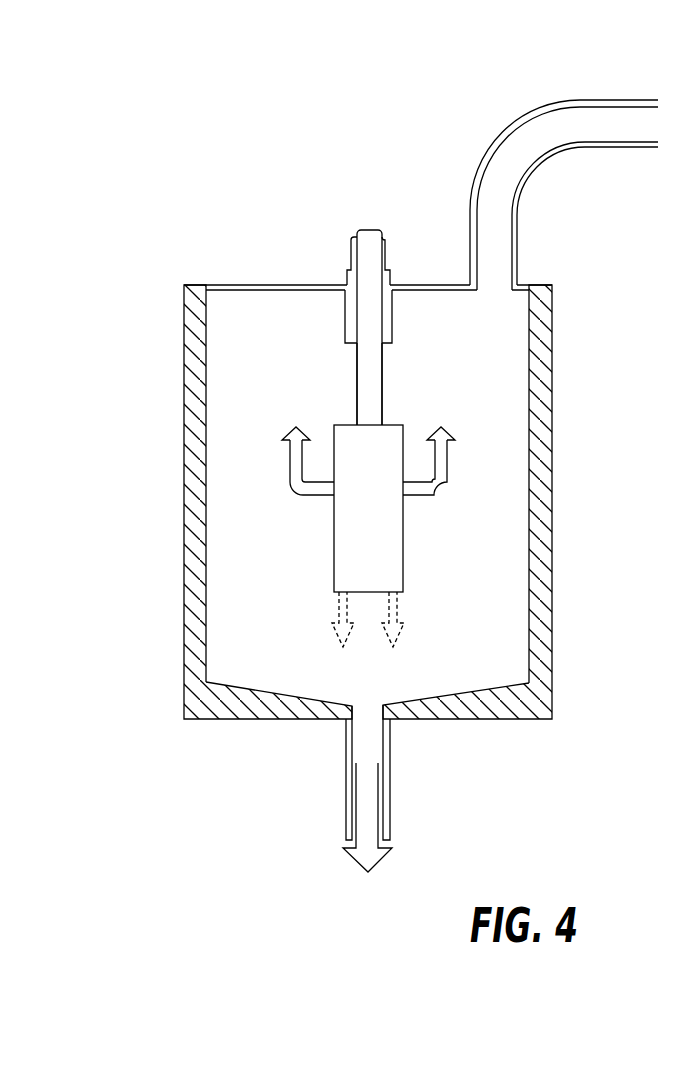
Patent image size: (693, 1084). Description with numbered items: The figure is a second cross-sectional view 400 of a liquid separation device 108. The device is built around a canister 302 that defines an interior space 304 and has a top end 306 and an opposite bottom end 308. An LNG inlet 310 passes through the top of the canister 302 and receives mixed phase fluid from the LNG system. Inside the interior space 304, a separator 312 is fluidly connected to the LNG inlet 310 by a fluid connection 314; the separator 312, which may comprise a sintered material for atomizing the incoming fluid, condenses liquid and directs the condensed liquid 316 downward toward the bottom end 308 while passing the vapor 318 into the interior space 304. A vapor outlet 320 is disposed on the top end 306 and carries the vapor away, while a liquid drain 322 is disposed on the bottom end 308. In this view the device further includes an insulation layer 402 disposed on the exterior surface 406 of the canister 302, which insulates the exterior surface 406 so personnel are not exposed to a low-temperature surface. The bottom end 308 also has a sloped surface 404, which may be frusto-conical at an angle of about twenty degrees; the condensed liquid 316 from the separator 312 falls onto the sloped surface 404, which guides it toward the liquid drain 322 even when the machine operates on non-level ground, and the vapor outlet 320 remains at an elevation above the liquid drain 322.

The second cross-sectional view 400 is at (229, 103).
The liquid separation device 108 is at (280, 264).
The canister 302 is at (200, 385).
The interior space 304 is at (293, 355).
The top end 306 is at (402, 284).
The bottom end 308 is at (470, 721).
The LNG inlet 310 is at (371, 229).
The separator 312 is at (405, 546).
The fluid connection 314 is at (384, 372).
The condensed liquid 316 is at (338, 606).
The vapor 318 is at (290, 467).
The vapor outlet 320 is at (622, 100).
The liquid drain 322 is at (390, 776).
The insulation layer 402 is at (543, 393).
The sloped surface 404 is at (467, 692).
The exterior surface 406 is at (529, 337).